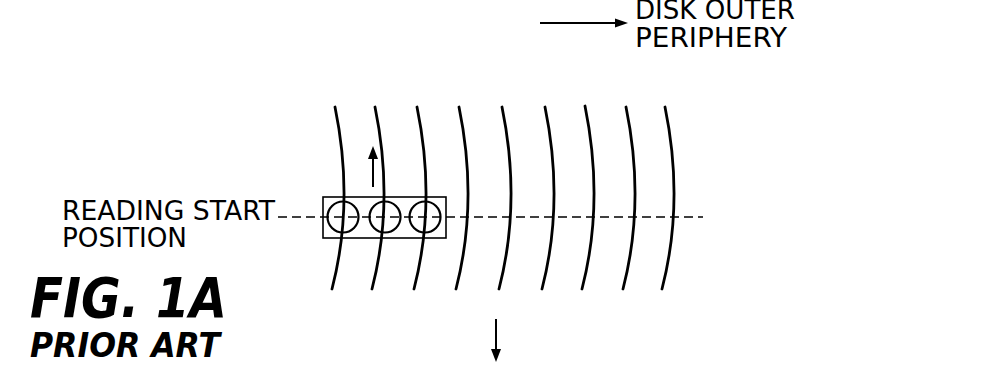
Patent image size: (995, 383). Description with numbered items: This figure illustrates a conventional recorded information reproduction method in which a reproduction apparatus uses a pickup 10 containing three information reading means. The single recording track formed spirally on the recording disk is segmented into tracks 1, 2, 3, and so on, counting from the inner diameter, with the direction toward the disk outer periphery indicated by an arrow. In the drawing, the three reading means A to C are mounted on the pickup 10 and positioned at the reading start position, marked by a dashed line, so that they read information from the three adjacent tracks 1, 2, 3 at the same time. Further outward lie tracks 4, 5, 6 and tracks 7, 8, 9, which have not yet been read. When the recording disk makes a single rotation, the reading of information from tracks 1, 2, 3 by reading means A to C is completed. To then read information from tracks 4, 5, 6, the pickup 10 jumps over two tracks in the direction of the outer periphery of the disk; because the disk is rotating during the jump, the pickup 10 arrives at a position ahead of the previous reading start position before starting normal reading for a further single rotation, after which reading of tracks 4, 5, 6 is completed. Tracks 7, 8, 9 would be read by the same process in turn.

The track 1 is at (355, 198).
The track 2 is at (395, 198).
The track 3 is at (438, 196).
The track 4 is at (479, 195).
The track 5 is at (521, 197).
The track 6 is at (566, 196).
The track 7 is at (604, 196).
The track 8 is at (643, 197).
The track 9 is at (662, 181).
The pickup 10 is at (322, 199).